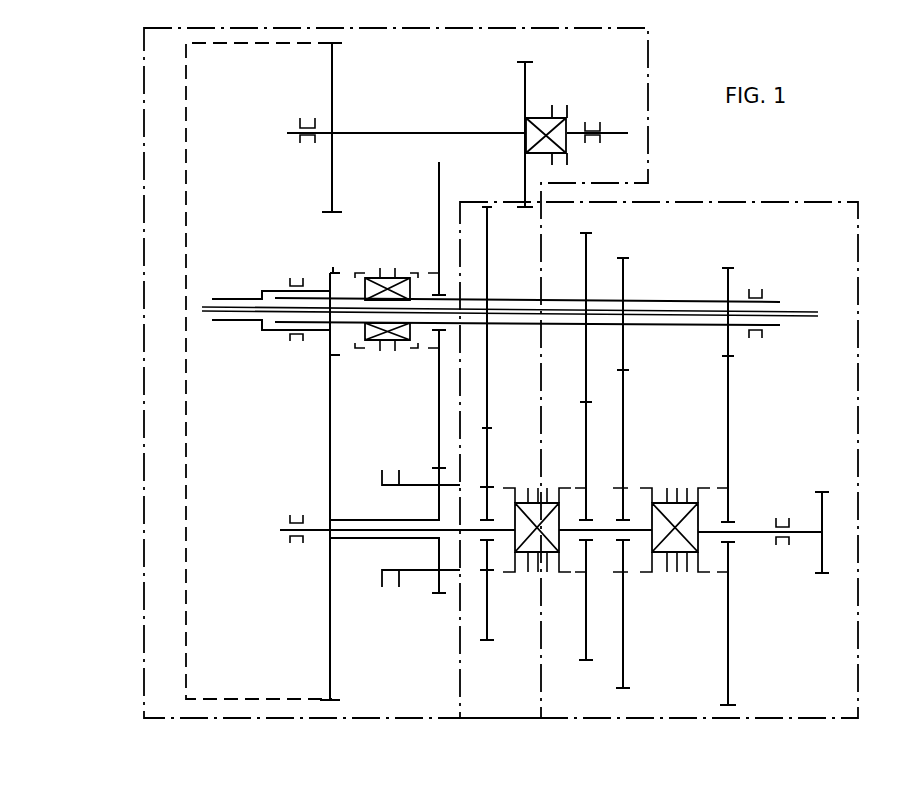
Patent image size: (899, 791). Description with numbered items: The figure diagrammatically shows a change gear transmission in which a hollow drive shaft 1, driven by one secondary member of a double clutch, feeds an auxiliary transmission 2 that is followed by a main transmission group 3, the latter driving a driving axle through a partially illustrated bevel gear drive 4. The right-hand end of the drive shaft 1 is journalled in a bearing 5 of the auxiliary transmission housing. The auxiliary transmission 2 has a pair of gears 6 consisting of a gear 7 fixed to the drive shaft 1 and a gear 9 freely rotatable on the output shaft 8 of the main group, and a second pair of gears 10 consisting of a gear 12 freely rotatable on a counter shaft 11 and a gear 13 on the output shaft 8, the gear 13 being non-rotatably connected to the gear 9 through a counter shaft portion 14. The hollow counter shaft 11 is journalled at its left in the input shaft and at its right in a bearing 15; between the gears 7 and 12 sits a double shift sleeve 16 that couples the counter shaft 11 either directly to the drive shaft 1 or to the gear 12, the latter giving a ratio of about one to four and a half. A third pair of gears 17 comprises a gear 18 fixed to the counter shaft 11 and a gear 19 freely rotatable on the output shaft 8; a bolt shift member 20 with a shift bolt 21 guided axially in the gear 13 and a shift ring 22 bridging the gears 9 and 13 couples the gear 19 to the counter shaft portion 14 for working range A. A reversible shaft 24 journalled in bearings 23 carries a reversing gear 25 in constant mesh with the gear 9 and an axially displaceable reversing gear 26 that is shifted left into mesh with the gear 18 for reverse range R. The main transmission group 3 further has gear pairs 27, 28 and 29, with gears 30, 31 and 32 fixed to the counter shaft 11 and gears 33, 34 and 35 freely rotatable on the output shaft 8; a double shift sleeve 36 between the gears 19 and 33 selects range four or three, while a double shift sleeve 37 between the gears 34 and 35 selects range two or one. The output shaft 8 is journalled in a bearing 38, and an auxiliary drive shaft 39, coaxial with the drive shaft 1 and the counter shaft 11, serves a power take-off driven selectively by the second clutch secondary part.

The drive shaft 1 is at (228, 299).
The auxiliary transmission 2 is at (144, 282).
The main transmission group 3 is at (716, 201).
The bevel gear drive 4 is at (823, 515).
The bearing 5 is at (296, 278).
The pair of gears 6 is at (321, 447).
The gear 7 is at (325, 273).
The output shaft 8 is at (753, 530).
The gear 9 is at (329, 610).
The pair of gears 10 is at (433, 441).
The counter shaft 11 is at (668, 300).
The gear 12 is at (437, 205).
The gear 13 is at (437, 586).
The counter shaft portion 14 is at (347, 520).
The bearing 15 is at (762, 287).
The double shift sleeve 16 is at (388, 278).
The third pair of gears 17 is at (483, 409).
The gear 18 is at (488, 255).
The gear 19 is at (478, 623).
The bolt shift member 20 is at (414, 582).
The shift bolt 21 is at (418, 484).
The shift ring 22 is at (390, 584).
The bearings 23 is at (306, 118).
The reversible shaft 24 is at (415, 133).
The reversing gear 25 is at (333, 92).
The reversing gear 26 is at (527, 91).
The gear pair 27 is at (578, 375).
The gear pair 28 is at (632, 403).
The gear pair 29 is at (720, 421).
The gear 30 is at (588, 255).
The gear 31 is at (627, 276).
The gear 32 is at (728, 281).
The gear 33 is at (587, 453).
The gear 34 is at (626, 440).
The gear 35 is at (730, 442).
The double shift sleeve 36 is at (540, 567).
The double shift sleeve 37 is at (677, 572).
The bearing 38 is at (290, 538).
The auxiliary drive shaft 39 is at (793, 317).